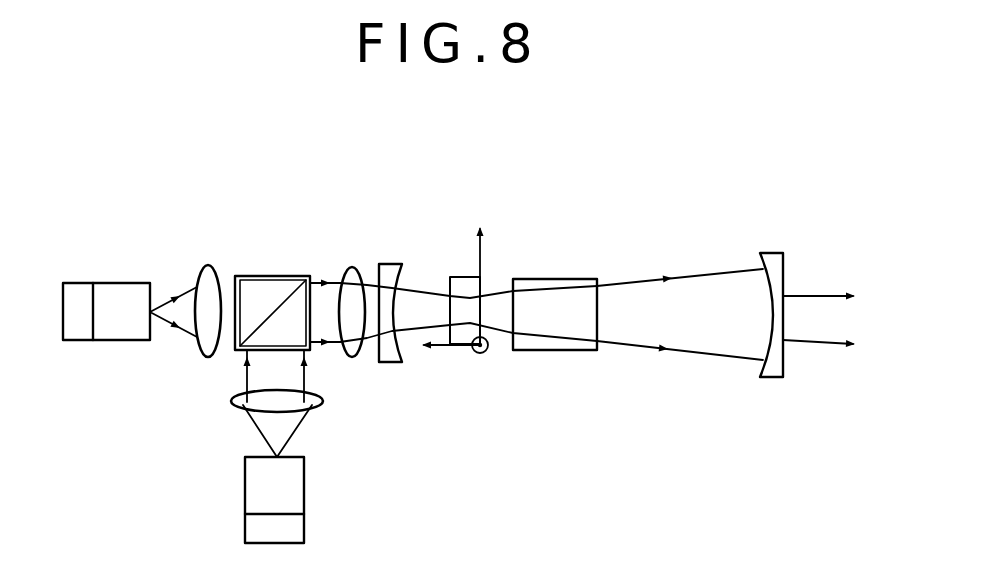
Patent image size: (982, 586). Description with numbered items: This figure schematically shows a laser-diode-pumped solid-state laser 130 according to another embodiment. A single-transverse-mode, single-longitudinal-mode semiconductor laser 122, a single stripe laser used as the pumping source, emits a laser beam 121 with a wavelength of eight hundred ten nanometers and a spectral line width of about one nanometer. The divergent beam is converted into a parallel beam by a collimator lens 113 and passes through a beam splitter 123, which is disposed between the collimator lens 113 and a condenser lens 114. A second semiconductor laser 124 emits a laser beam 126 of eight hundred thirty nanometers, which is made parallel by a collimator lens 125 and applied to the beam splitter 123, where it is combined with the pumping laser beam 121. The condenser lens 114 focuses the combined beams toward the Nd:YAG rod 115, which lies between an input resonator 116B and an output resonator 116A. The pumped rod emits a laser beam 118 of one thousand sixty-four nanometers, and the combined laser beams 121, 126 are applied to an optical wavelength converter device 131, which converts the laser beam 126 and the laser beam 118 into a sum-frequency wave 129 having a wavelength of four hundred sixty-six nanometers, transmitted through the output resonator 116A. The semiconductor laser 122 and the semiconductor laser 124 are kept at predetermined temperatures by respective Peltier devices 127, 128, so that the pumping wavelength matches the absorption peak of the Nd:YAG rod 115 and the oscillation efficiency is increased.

The collimator lens 113 is at (207, 346).
The condenser lens 114 is at (348, 358).
The Nd:YAG rod 115 is at (555, 279).
The output resonator 116A is at (770, 377).
The input resonator 116B is at (397, 360).
The laser beam 118 is at (697, 275).
The laser beam 121 is at (195, 287).
The single-transverse-mode, single-longitudinal-mode semiconductor laser 122 is at (120, 290).
The beam splitter 123 is at (270, 275).
The semiconductor laser 124 is at (295, 487).
The collimator lens 125 is at (243, 403).
The laser beam 126 is at (245, 379).
The Peltier device 127 is at (78, 292).
The Peltier device 128 is at (295, 528).
The sum-frequency wave 129 is at (820, 343).
The laser-diode-pumped solid-state laser 130 is at (490, 162).
The optical wavelength converter device 131 is at (452, 277).